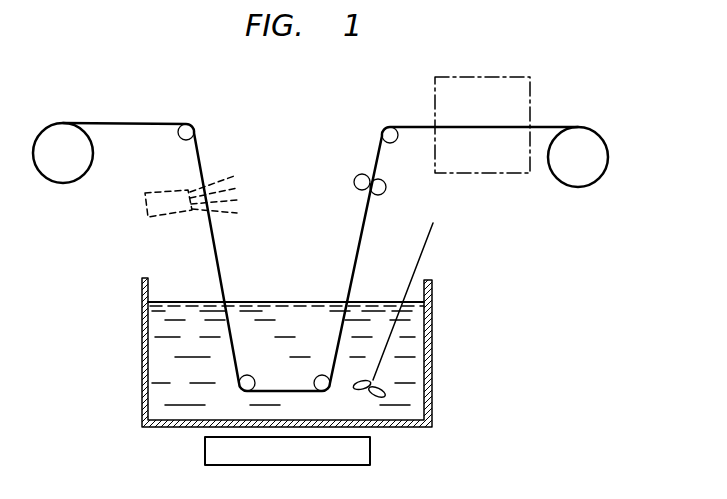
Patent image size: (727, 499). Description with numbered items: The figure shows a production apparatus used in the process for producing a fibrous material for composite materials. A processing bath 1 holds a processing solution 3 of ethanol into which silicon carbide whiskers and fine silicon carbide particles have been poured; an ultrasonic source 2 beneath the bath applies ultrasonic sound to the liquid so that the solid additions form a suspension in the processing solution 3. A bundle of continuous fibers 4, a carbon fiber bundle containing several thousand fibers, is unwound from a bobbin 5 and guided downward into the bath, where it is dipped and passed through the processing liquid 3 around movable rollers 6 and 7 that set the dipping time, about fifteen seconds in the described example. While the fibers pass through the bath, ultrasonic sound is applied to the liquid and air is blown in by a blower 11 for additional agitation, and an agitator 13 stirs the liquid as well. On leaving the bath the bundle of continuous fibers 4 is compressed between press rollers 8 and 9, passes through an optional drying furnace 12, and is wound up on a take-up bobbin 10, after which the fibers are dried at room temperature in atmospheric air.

The processing bath 1 is at (434, 340).
The ultrasonic source 2 is at (372, 456).
The processing solution 3 is at (158, 352).
The bundle of continuous fibers 4 is at (132, 116).
The bobbin 5 is at (63, 186).
The movable roller 6 is at (250, 376).
The movable roller 7 is at (318, 376).
The press roller 8 is at (354, 178).
The press roller 9 is at (387, 188).
The bobbin 10 is at (585, 184).
The blower 11 is at (146, 207).
The drying furnace 12 is at (535, 88).
The agitator 13 is at (436, 231).